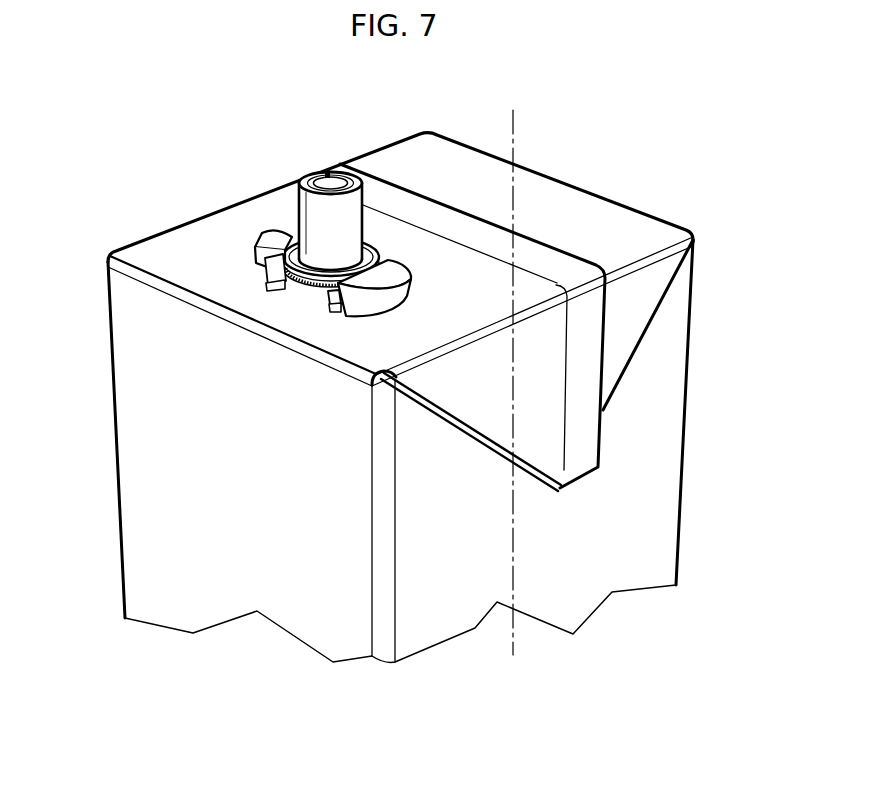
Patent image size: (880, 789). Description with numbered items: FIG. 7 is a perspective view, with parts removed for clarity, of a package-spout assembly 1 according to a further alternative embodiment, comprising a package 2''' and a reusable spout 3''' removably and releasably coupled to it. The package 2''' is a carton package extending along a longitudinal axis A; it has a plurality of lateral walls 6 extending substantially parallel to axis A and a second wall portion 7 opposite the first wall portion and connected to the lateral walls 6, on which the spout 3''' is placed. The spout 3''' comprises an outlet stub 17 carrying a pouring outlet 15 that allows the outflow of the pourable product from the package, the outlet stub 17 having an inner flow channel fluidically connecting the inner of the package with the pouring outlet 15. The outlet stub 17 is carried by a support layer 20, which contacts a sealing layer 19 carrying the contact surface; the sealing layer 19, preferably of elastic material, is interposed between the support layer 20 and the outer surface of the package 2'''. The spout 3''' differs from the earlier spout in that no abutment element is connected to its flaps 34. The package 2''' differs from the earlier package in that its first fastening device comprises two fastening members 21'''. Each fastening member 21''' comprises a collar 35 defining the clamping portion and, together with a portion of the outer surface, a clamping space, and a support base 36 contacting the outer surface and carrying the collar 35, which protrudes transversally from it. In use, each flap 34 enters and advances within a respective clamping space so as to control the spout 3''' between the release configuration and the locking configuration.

The package-spout assembly 1 is at (652, 143).
The package 2''' is at (516, 303).
The spout 3''' is at (262, 138).
The lateral walls 6 is at (135, 386).
The second wall portion 7 is at (630, 213).
The pouring outlet 15 is at (327, 170).
The outlet stub 17 is at (358, 205).
The sealing layer 19 is at (290, 284).
The support layer 20 is at (296, 287).
The fastening member 21''' is at (346, 224).
The flap 34 is at (275, 272).
The collar 35 is at (270, 238).
The support base 36 is at (265, 262).
The longitudinal axis A is at (508, 489).